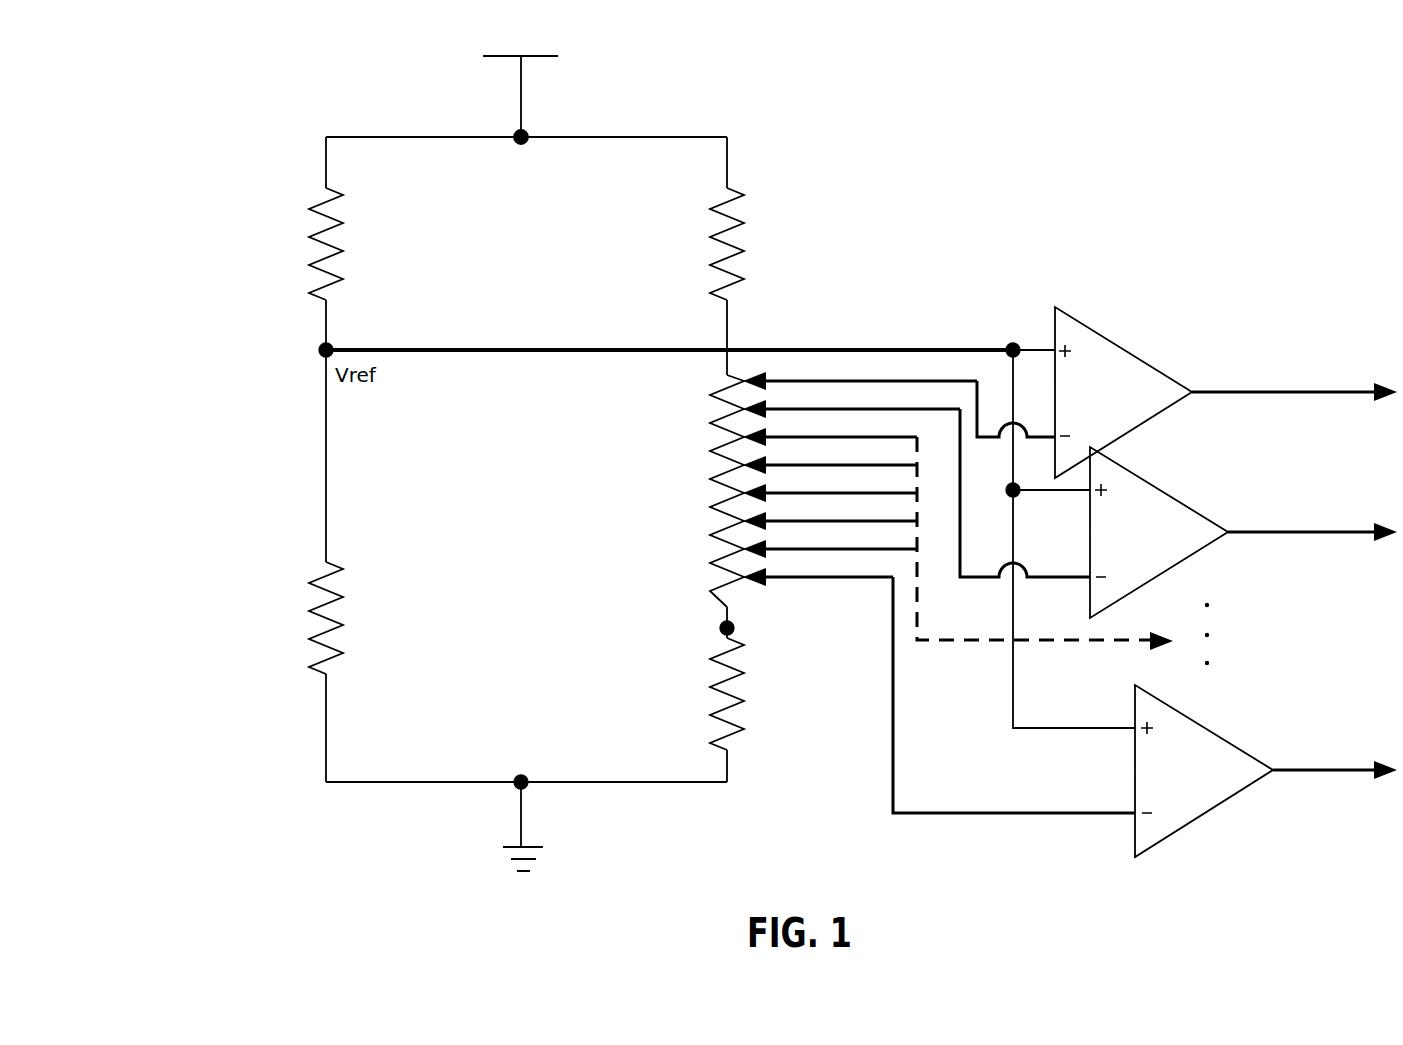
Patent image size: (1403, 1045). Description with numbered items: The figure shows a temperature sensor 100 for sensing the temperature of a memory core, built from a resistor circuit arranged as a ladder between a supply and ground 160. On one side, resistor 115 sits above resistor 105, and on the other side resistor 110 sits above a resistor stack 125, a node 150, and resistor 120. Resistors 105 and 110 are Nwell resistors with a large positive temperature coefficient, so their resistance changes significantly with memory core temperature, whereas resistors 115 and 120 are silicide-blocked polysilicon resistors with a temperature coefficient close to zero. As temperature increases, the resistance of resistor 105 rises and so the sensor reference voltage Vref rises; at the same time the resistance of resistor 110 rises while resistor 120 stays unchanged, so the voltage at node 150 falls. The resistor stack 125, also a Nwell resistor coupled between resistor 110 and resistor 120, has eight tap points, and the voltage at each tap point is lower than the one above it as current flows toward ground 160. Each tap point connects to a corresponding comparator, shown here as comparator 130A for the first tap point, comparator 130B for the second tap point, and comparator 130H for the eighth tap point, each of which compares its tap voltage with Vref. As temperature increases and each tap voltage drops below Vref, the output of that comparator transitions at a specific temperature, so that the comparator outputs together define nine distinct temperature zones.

The temperature sensor 100 is at (272, 105).
The resistor 105 is at (347, 618).
The resistor 110 is at (751, 244).
The resistor 115 is at (347, 244).
The resistor 120 is at (750, 694).
The resistor stack 125 is at (850, 585).
The comparator 130A is at (1207, 392).
The comparator 130B is at (1222, 532).
The comparator 130H is at (1242, 771).
The node 150 is at (722, 628).
The ground 160 is at (538, 837).